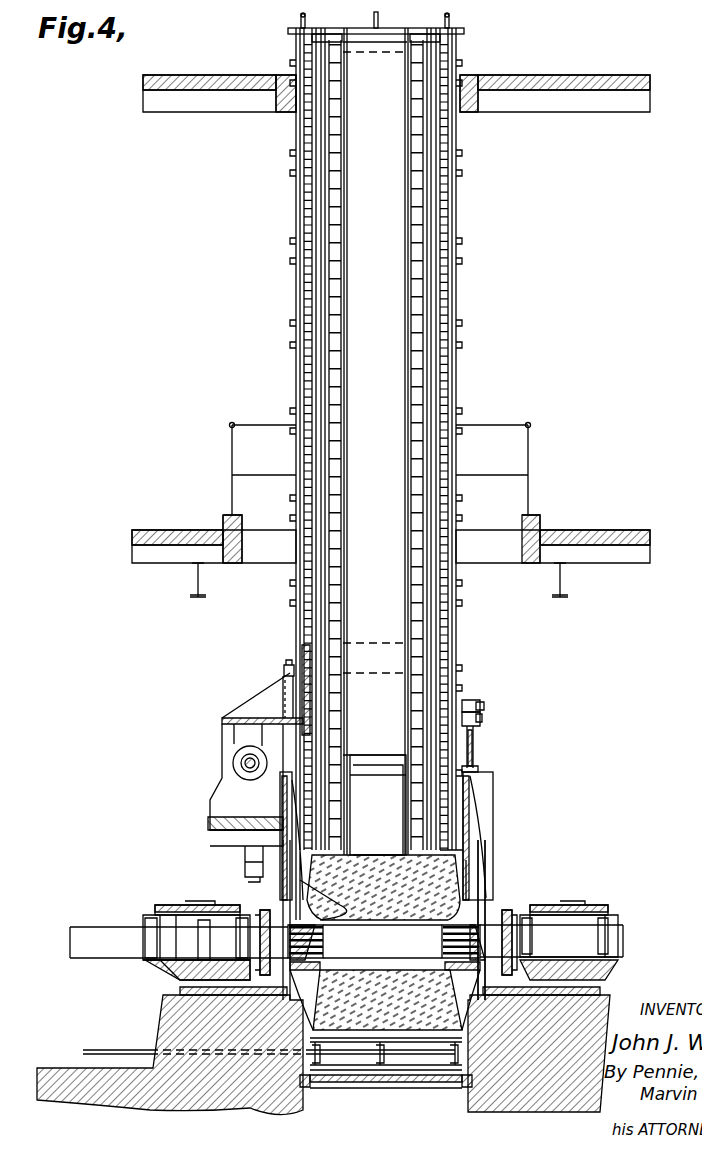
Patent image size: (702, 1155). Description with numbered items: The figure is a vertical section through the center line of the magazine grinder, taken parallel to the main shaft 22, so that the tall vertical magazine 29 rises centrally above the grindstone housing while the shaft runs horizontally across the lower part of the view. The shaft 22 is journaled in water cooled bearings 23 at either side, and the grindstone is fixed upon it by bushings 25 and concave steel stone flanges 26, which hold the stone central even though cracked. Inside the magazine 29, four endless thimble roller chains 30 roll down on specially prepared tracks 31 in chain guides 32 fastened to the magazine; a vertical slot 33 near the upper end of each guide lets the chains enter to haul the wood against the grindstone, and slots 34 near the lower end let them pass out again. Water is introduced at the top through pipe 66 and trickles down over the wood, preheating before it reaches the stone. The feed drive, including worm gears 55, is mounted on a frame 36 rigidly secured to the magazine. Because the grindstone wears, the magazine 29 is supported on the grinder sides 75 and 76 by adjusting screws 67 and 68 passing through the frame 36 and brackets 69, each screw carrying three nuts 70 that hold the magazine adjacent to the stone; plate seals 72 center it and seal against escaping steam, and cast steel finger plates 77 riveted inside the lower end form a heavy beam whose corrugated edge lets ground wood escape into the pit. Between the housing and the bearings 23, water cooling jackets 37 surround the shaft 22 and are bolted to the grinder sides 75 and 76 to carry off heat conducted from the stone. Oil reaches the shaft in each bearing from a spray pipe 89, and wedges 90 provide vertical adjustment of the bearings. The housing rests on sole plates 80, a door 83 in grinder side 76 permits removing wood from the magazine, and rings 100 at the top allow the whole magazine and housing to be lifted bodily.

The shaft 22 is at (72, 927).
The water cooled bearings 23 is at (145, 916).
The bushings 25 is at (320, 918).
The concave steel stone flanges 26 is at (360, 905).
The magazine 29 is at (458, 650).
The endless thimble roller chains 30 is at (434, 318).
The tracks 31 is at (432, 330).
The chain guides 32 is at (454, 355).
The vertical slot 33 is at (438, 80).
The slots 34 is at (413, 772).
The frame 36 is at (240, 716).
The water cooling jackets 37 is at (260, 912).
The worm gears 55 is at (212, 796).
The pipe 66 is at (380, 19).
The adjusting screw 67 is at (287, 663).
The adjusting screw 68 is at (484, 704).
The brackets 69 is at (482, 720).
The nuts 70 is at (282, 669).
The plate seals 72 is at (470, 850).
The grinder side 75 is at (243, 850).
The grinder side 76 is at (492, 880).
The cast steel finger plates 77 is at (488, 862).
The sole plates 80 is at (175, 989).
The door 83 is at (486, 806).
The spray pipe 89 is at (185, 905).
The wedges 90 is at (178, 980).
The rings 100 is at (306, 16).